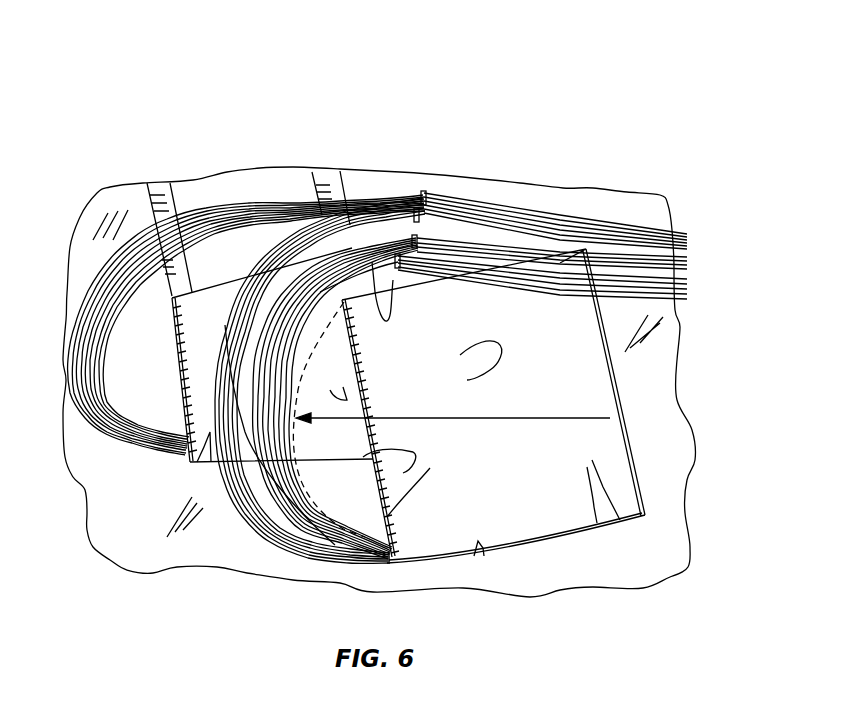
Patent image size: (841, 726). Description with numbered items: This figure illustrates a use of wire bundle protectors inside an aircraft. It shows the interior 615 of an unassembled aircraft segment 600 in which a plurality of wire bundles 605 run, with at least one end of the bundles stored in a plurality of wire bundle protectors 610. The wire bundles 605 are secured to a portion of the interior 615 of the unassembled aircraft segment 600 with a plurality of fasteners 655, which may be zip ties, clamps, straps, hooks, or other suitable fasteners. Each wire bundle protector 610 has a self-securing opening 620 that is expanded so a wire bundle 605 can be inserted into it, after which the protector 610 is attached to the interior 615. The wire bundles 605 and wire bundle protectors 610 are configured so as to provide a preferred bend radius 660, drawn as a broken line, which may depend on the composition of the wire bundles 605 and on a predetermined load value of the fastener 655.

The unassembled aircraft segment 600 is at (669, 165).
The wire bundles 605 is at (690, 230).
The wire bundle protectors 610 is at (201, 291).
The interior 615 is at (657, 351).
The self-securing opening 620 is at (178, 445).
The fasteners 655 is at (420, 226).
The preferred bend radius 660 is at (343, 326).